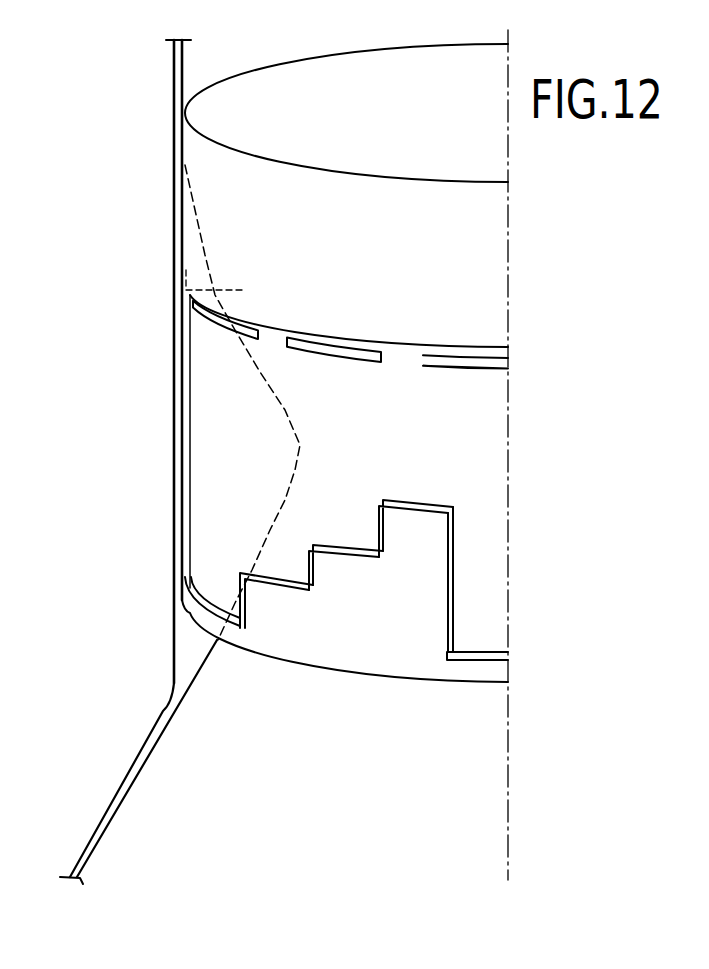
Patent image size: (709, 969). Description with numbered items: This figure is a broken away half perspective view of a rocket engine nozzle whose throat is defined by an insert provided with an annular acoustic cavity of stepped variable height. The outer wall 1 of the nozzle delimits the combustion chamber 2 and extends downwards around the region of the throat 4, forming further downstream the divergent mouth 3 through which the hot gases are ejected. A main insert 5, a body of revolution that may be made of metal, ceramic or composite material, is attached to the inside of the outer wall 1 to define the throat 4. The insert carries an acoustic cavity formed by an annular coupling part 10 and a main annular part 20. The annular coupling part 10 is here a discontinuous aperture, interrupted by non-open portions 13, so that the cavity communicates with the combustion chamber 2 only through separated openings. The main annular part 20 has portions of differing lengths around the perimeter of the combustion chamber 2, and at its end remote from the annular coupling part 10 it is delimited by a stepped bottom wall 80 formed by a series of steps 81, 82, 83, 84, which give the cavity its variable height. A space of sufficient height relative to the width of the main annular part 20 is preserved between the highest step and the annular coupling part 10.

The outer wall 1 is at (173, 78).
The combustion chamber 2 is at (437, 118).
The divergent mouth 3 is at (118, 783).
The throat 4 is at (299, 452).
The main insert 5 is at (207, 465).
The annular coupling part 10 is at (238, 327).
The non-open portions 13 is at (277, 337).
The main annular part 20 is at (186, 373).
The stepped bottom wall 80 is at (452, 548).
The step 81 is at (200, 604).
The step 82 is at (276, 577).
The step 83 is at (336, 545).
The step 84 is at (410, 503).